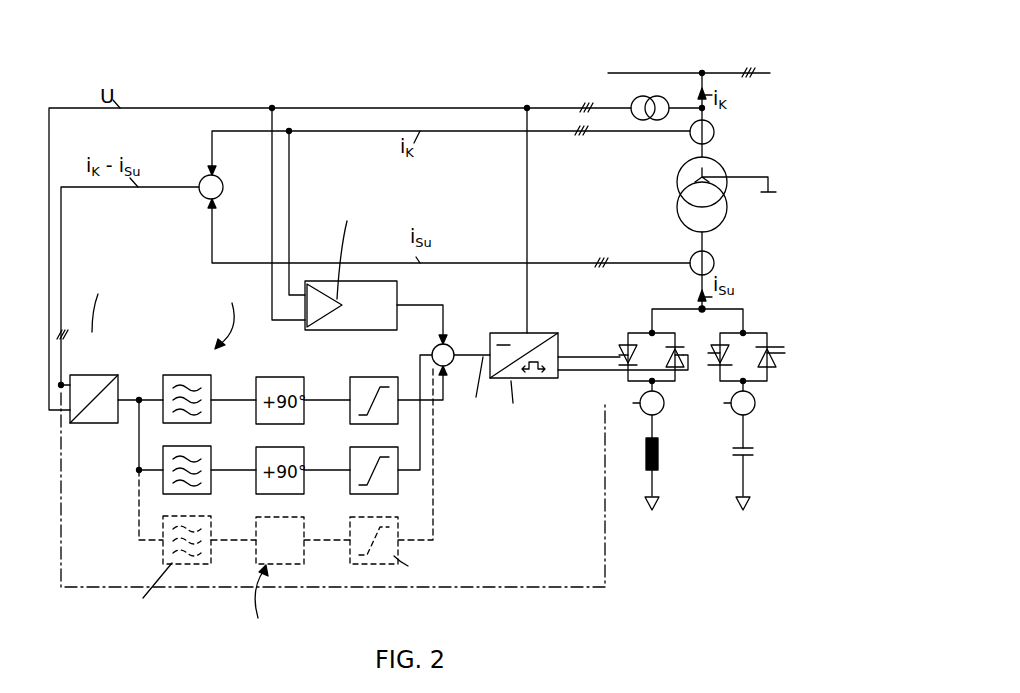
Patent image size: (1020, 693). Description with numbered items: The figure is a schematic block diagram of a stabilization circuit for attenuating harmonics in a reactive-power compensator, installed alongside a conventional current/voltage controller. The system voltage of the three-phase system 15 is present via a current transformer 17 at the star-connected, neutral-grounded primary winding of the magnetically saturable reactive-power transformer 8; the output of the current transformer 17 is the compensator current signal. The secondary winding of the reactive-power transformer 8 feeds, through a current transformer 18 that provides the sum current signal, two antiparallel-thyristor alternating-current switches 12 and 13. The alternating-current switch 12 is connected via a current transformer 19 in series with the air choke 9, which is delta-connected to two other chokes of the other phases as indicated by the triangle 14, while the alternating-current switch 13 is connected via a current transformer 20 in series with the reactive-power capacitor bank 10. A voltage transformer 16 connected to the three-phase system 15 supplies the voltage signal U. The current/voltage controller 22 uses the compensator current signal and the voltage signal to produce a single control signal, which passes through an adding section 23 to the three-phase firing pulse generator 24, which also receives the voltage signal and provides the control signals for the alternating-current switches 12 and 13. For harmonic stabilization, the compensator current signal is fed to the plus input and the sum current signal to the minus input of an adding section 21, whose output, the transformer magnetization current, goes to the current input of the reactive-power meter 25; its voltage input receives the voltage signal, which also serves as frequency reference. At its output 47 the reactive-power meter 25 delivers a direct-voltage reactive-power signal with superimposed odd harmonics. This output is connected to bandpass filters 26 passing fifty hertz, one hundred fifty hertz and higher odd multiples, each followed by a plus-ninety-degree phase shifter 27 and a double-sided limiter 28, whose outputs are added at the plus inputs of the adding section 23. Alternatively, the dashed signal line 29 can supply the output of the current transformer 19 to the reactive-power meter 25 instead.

The reactive-power transformer 8 is at (641, 205).
The air choke 9 is at (658, 470).
The reactive-power capacitor bank 10 is at (750, 460).
The alternating-current switch 12 is at (640, 342).
The alternating-current switch 13 is at (752, 342).
The triangle indicating delta connection 14 is at (655, 510).
The three-phase system 15 is at (612, 73).
The voltage transformer 16 is at (628, 102).
The current transformer 17 is at (714, 132).
The current transformer 18 is at (714, 263).
The current transformer 19 is at (660, 414).
The current transformer 20 is at (752, 414).
The adding section 21 is at (222, 185).
The current/voltage controller 22 is at (398, 303).
The adding section 23 is at (452, 347).
The firing pulse generator 24 is at (535, 333).
The reactive-power meter 25 is at (88, 375).
The bandpass filter 26 is at (212, 386).
The +90° phase shifter 27 is at (280, 377).
The double-sided limiter 28 is at (358, 377).
The signal line 29 is at (605, 545).
The output of the reactive-power meter 47 is at (126, 397).